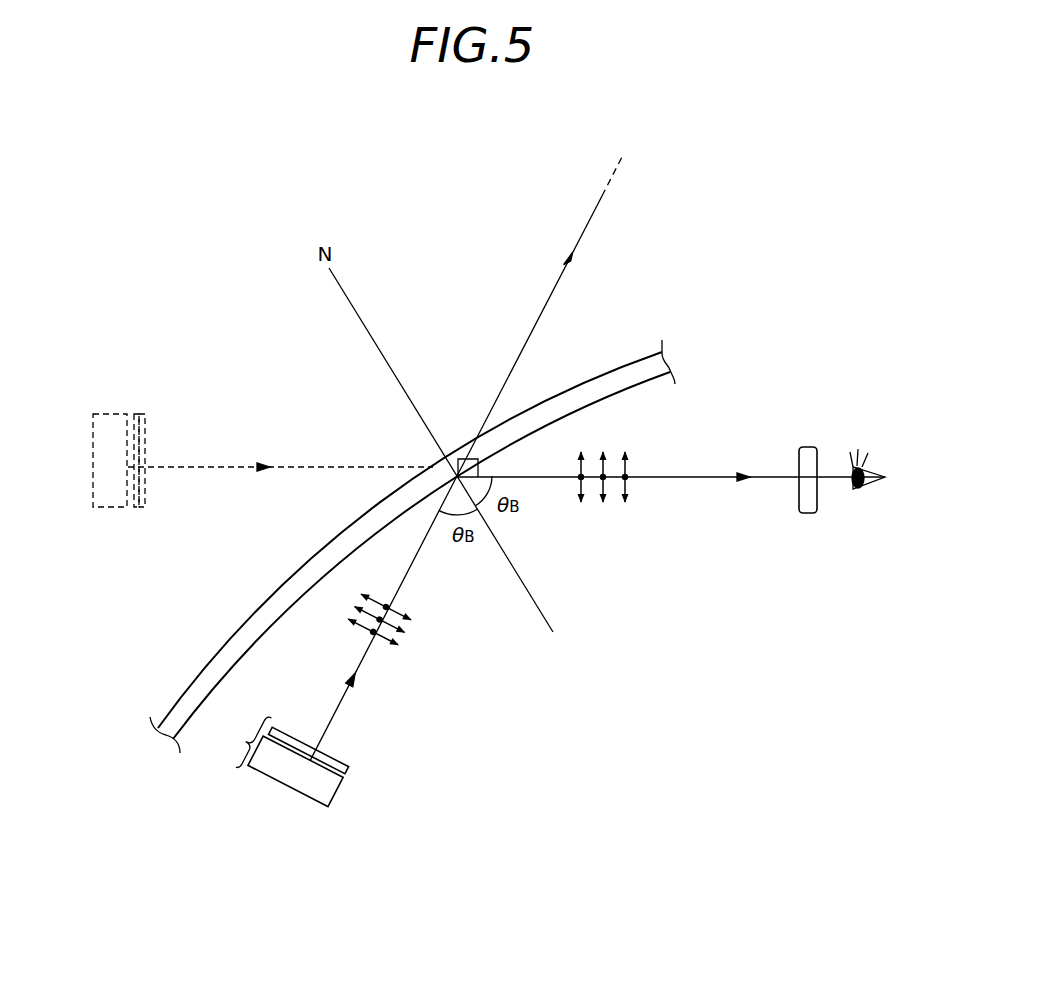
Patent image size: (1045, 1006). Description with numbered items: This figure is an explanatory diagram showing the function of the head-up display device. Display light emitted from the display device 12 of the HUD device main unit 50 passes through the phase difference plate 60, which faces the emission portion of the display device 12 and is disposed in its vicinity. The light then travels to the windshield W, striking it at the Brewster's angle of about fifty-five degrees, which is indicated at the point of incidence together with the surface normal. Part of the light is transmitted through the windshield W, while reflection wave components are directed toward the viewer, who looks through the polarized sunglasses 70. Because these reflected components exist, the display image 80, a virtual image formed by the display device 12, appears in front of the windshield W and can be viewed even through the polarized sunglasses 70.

The display device 12 is at (331, 797).
The HUD device main unit 50 is at (282, 762).
The phase difference plate 60 is at (349, 772).
The polarized sunglasses 70 is at (809, 513).
The display image 80 is at (93, 516).
The windshield W is at (623, 377).